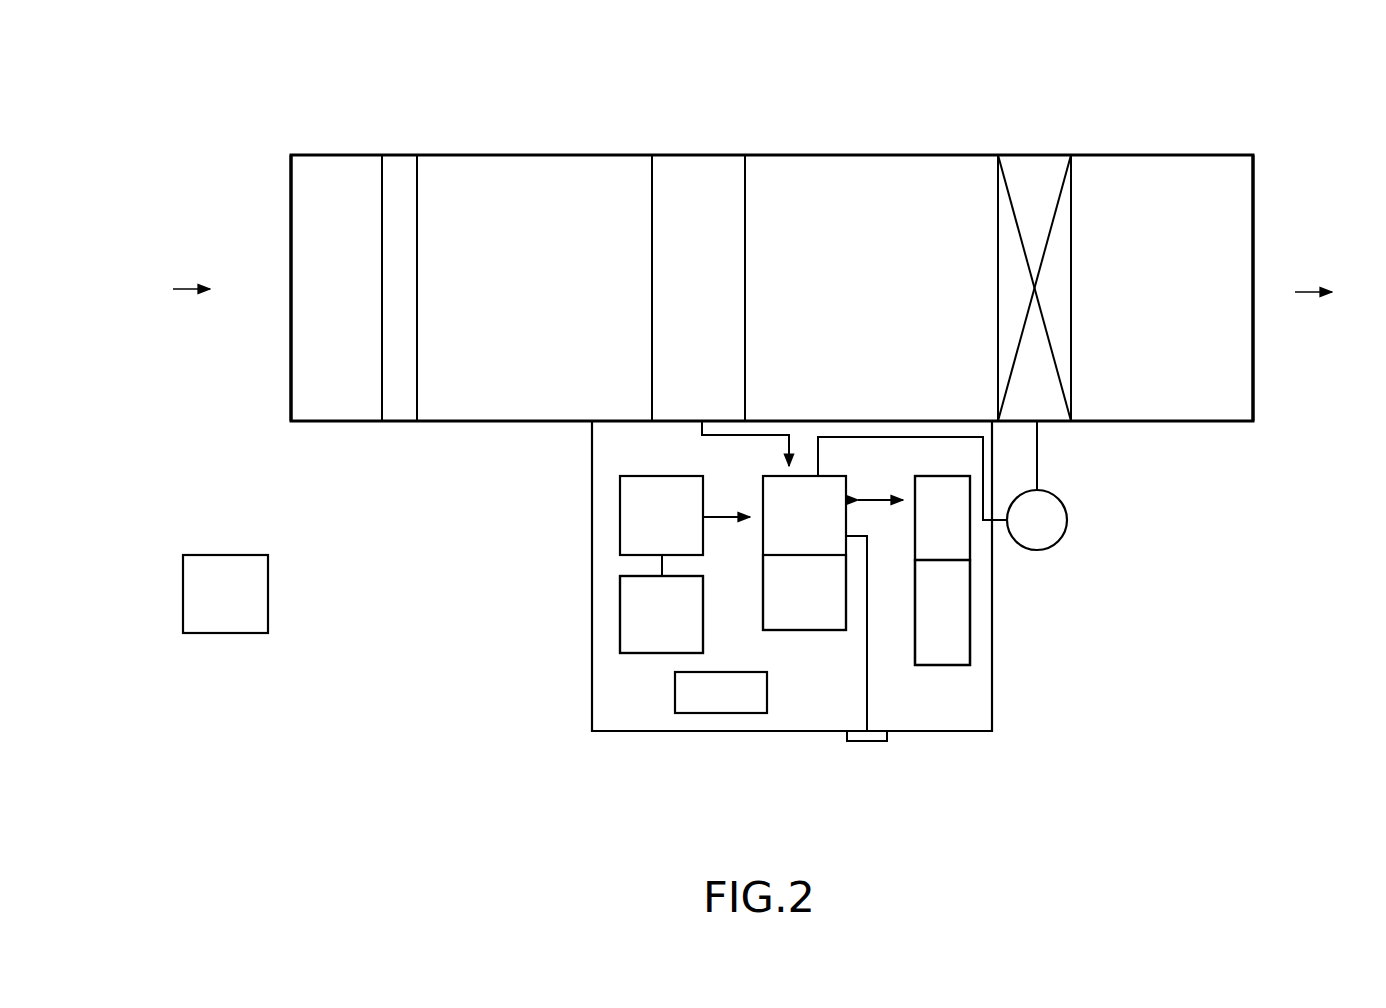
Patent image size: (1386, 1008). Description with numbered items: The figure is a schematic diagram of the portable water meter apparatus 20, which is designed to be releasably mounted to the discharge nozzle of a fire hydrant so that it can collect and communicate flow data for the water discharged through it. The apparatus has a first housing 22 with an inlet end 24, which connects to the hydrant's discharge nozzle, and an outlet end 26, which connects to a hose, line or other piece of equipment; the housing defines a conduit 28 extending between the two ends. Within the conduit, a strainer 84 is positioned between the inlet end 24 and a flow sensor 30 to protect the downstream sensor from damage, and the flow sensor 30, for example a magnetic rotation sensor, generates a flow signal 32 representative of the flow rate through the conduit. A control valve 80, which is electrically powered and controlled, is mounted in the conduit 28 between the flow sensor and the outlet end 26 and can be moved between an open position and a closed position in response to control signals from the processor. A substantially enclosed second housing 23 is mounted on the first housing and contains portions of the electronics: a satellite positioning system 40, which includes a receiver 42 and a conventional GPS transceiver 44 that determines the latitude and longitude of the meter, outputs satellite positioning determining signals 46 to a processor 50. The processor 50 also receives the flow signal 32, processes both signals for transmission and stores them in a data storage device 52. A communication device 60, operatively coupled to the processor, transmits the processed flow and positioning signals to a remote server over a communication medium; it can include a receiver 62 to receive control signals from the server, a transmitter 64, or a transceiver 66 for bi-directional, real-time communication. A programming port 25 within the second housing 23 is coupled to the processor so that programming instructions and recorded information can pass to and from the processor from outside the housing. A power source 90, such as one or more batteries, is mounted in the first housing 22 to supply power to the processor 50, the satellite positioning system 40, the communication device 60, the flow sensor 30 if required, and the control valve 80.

The portable water meter apparatus 20 is at (772, 224).
The first housing 22 is at (505, 155).
The second housing 23 is at (592, 690).
The inlet end 24 is at (291, 404).
The programming port 25 is at (858, 742).
The outlet end 26 is at (1253, 392).
The conduit 28 is at (546, 307).
The flow sensor 30 is at (712, 307).
The flow signal 32 is at (759, 435).
The satellite positioning system 40 is at (675, 530).
The receiver 42 is at (657, 615).
The GPS transceiver 44 is at (694, 642).
The satellite positioning determining signals 46 is at (726, 517).
The processor 50 is at (818, 530).
The data storage device 52 is at (818, 608).
The communication device 60 is at (957, 512).
The receiver 62 is at (957, 546).
The transmitter 64 is at (957, 605).
The transceiver 66 is at (957, 644).
The control valve 80 is at (1067, 520).
The strainer 84 is at (402, 421).
The power source 90 is at (735, 706).